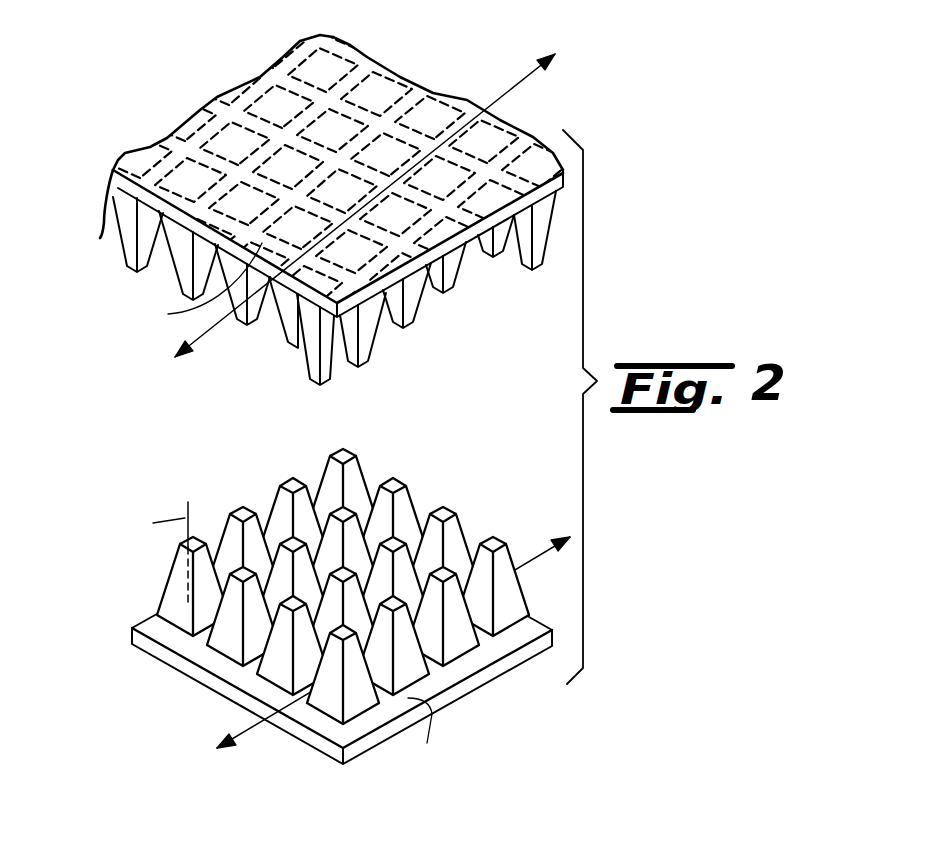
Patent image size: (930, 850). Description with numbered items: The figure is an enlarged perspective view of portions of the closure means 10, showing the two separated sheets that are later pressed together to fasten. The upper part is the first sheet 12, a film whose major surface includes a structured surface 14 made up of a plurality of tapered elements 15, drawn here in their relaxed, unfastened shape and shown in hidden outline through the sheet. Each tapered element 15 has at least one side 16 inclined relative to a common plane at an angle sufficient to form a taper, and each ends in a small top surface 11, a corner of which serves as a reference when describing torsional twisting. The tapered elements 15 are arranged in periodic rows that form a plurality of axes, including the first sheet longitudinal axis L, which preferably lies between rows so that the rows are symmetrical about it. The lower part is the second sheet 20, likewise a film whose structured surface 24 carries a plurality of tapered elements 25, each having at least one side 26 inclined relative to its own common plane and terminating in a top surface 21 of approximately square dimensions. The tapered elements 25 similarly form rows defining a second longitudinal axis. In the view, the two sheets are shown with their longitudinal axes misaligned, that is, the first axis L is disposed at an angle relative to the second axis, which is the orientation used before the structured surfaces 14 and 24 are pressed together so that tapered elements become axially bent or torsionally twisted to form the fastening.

The closure means 10 is at (382, 397).
The top surface 11 is at (366, 357).
The first sheet 12 is at (331, 201).
The structured surface 14 is at (503, 280).
The tapered elements 15 is at (541, 246).
The side 16 is at (433, 289).
The second sheet 20 is at (220, 690).
The top surface 21 is at (344, 583).
The structured surface 24 is at (352, 595).
The tapered elements 25 is at (505, 613).
The side 26 is at (456, 515).
The first sheet longitudinal axis L is at (363, 206).